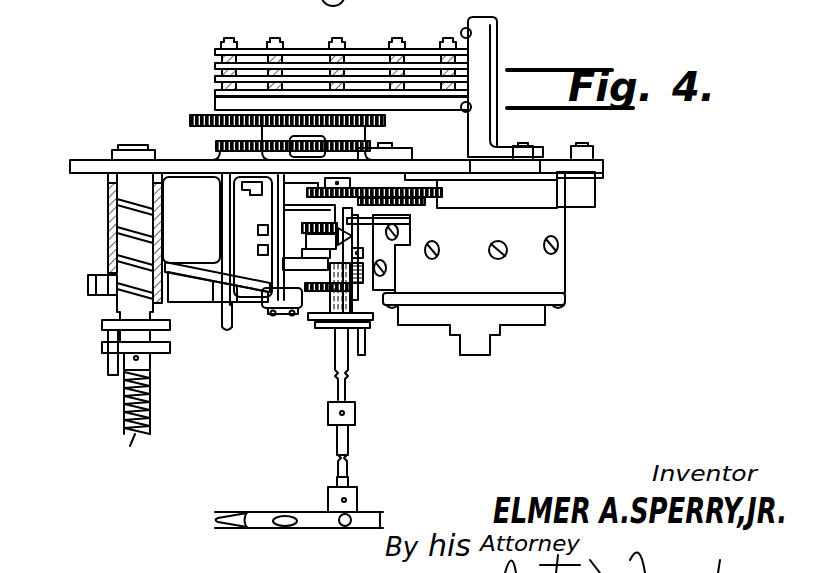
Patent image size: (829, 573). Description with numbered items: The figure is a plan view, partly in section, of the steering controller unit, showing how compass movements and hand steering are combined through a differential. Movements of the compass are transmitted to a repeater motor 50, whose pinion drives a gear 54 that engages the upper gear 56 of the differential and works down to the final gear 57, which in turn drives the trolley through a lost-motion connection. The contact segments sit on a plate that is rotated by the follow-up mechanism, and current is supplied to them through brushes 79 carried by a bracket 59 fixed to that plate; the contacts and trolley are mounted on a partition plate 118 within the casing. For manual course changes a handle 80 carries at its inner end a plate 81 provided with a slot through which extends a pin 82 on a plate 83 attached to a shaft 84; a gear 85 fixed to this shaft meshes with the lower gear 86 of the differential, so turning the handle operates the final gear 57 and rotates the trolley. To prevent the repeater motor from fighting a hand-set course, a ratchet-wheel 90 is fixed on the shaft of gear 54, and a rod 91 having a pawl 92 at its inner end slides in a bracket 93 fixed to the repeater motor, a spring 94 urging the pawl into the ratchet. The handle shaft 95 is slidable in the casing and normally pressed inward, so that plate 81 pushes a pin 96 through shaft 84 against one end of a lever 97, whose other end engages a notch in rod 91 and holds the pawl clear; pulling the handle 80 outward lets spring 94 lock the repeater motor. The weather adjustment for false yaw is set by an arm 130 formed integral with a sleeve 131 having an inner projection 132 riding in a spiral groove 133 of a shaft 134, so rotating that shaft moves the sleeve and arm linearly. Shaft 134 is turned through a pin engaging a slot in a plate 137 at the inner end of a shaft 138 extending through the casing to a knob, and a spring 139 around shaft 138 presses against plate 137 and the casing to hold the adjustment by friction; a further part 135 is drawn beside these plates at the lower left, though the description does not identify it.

The brushes 79 is at (449, 45).
The bracket 59 is at (493, 55).
The partition plate 118 is at (80, 152).
The spiral groove 133 is at (113, 205).
The shaft 134 is at (155, 195).
The sleeve 131 is at (162, 229).
The projection 132 is at (110, 283).
The arm 130 is at (217, 296).
The plate 137 is at (171, 348).
The rod 135 is at (112, 372).
The spring 139 is at (150, 421).
The shaft 138 is at (134, 456).
The upper gear of differential 56 is at (305, 192).
The final gear of differential 57 is at (300, 227).
The lever 97 is at (352, 236).
The rod 91 is at (358, 241).
The pawl 92 is at (372, 218).
The bracket 93 is at (410, 233).
The spring 94 is at (392, 281).
The ratchet-wheel 90 is at (425, 205).
The gear 54 is at (442, 195).
The repeater motor 50 is at (474, 281).
The gear 85 is at (332, 290).
The lower gear of differential 86 is at (282, 301).
The shaft 84 is at (318, 318).
The plate 83 is at (338, 330).
The pin 96 is at (337, 330).
The pin 82 is at (372, 358).
The plate 81 is at (373, 323).
The shaft 95 is at (348, 446).
The handle 80 is at (349, 530).